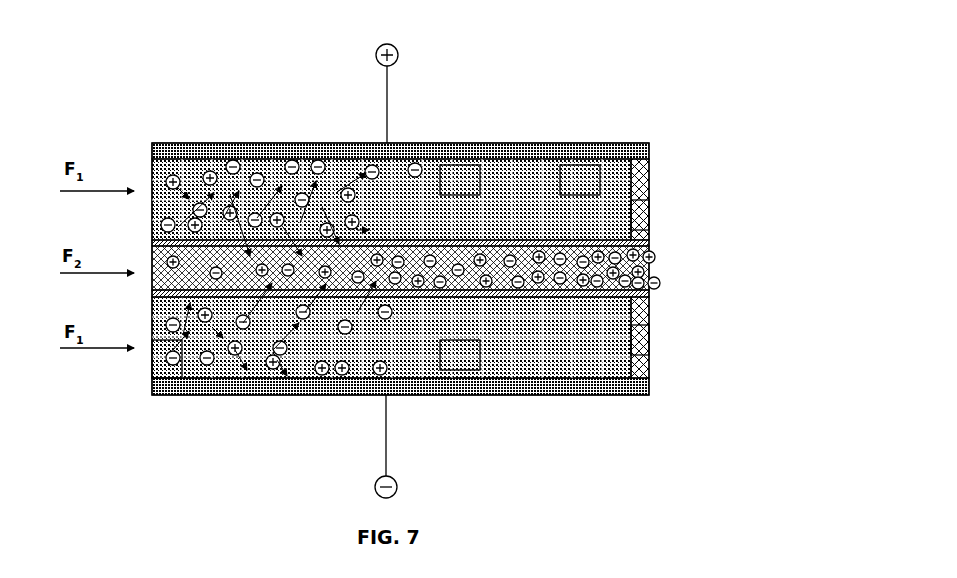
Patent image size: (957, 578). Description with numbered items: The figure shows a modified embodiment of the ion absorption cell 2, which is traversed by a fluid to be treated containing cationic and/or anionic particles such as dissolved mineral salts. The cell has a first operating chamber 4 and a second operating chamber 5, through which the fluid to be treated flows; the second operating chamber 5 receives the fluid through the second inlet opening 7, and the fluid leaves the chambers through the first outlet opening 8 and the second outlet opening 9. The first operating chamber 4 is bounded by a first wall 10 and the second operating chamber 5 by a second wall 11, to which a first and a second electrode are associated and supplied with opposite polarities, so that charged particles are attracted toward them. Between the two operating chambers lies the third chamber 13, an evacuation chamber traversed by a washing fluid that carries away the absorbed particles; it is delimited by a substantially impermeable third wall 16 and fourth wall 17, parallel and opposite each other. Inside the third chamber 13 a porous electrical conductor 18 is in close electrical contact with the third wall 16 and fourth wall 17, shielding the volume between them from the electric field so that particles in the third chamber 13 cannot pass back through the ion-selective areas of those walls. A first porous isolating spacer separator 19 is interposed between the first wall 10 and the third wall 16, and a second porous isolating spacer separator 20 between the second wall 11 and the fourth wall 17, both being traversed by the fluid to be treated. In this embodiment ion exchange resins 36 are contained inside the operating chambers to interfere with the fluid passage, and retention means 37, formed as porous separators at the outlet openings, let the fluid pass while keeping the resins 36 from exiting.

The ion absorption cell 2 is at (669, 112).
The first operating chamber 4 is at (601, 203).
The second operating chamber 5 is at (601, 330).
The second inlet opening 7 is at (152, 368).
The first outlet opening 8 is at (649, 182).
The second outlet opening 9 is at (651, 360).
The first wall 10 is at (540, 157).
The second wall 11 is at (630, 378).
The third chamber 13 is at (657, 259).
The third wall 16 is at (152, 243).
The fourth wall 17 is at (152, 293).
The porous electrical conductor 18 is at (276, 163).
The first porous isolating spacer separator 19 is at (580, 174).
The second porous isolating spacer separator 20 is at (556, 368).
The ion exchange resins 36 is at (460, 161).
The retention means 37 is at (651, 218).